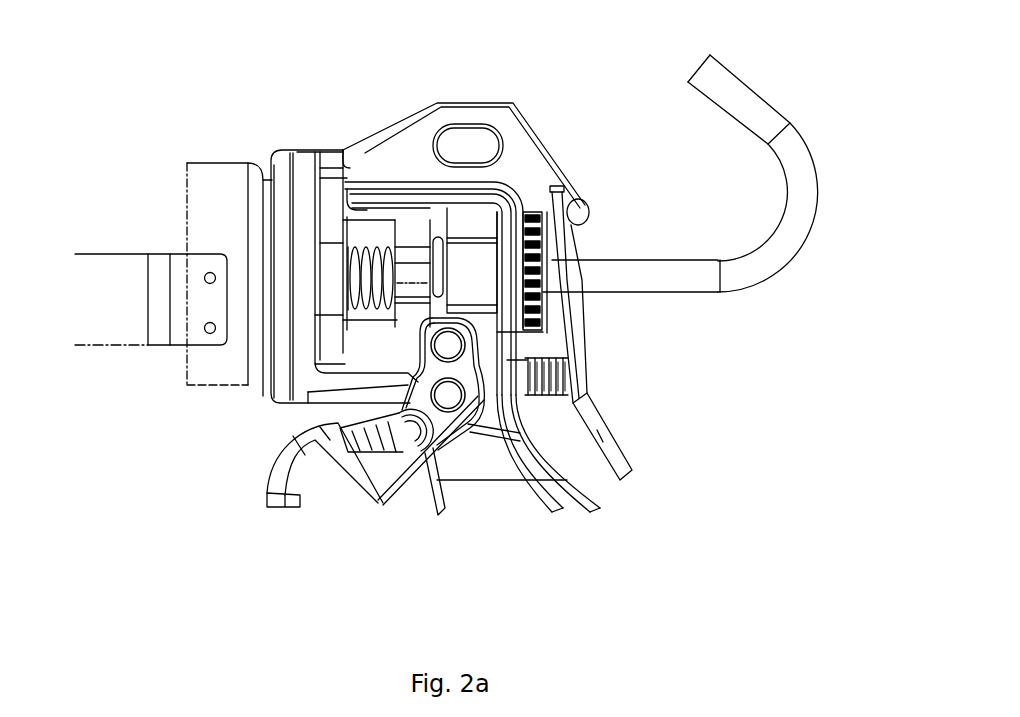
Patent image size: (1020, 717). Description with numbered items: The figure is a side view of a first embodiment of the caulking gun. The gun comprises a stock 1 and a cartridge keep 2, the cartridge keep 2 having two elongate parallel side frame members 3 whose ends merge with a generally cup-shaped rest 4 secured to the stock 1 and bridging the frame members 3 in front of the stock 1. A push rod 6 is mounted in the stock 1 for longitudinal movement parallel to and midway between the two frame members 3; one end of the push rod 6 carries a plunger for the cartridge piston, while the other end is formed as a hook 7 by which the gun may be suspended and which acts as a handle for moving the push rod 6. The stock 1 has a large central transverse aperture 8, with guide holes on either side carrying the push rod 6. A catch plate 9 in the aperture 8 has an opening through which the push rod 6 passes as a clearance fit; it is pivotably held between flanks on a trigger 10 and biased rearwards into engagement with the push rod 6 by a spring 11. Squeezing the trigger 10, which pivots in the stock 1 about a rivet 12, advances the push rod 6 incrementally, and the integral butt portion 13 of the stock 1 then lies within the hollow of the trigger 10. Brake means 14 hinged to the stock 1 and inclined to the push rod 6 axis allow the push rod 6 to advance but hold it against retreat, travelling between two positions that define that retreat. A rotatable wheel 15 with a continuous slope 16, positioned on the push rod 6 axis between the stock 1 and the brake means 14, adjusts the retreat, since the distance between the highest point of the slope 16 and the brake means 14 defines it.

The stock 1 is at (555, 113).
The cartridge keep 2 is at (147, 192).
The side frame member 3 is at (119, 323).
The rest 4 is at (227, 367).
The push rod 6 is at (682, 280).
The hook 7 is at (747, 110).
The aperture 8 is at (369, 212).
The catch plate 9 is at (413, 225).
The trigger 10 is at (327, 495).
The spring 11 is at (372, 295).
The rivet 12 is at (450, 345).
The butt portion 13 is at (438, 513).
The brake means 14 is at (600, 430).
The rotatable wheel 15 is at (543, 220).
The slope 16 is at (545, 250).